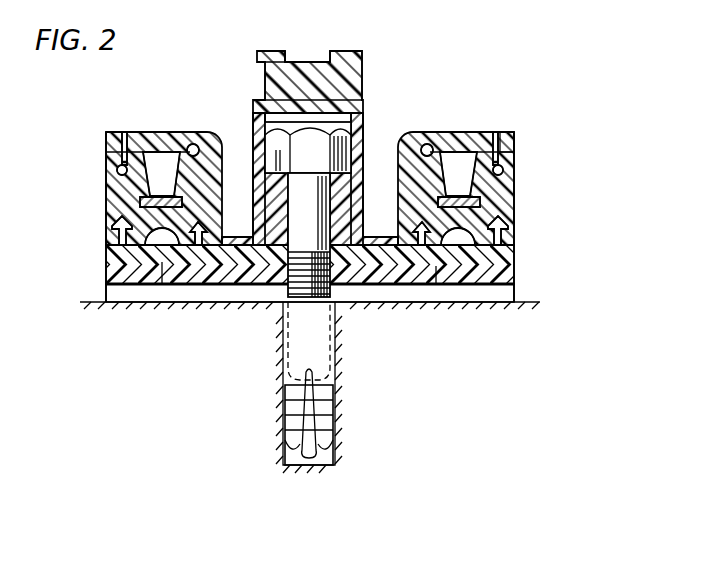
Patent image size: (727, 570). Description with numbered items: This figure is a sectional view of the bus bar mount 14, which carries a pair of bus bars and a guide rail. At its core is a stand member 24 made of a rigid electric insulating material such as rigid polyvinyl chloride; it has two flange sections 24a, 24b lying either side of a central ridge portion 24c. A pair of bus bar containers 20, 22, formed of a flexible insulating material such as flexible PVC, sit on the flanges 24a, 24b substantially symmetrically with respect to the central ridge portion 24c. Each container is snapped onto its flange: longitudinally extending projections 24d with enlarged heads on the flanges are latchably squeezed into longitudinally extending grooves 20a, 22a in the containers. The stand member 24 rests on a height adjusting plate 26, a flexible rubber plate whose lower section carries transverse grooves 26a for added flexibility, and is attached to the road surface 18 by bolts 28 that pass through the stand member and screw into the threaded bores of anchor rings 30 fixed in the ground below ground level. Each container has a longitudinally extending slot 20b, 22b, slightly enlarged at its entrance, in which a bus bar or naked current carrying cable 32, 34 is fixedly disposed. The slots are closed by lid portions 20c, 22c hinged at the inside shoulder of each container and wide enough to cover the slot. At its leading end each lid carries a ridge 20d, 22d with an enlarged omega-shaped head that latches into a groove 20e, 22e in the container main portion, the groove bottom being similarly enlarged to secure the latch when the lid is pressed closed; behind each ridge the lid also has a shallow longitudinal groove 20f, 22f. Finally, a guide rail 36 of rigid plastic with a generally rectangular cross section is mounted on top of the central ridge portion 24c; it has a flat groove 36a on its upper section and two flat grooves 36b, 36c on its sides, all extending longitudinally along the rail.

The bus bar mount 14 is at (468, 57).
The road surface 18 is at (85, 302).
The bus bar container 20 is at (508, 210).
The groove 20a is at (514, 240).
The slot 20b is at (456, 160).
The lid portion 20c is at (500, 152).
The ridge 20d is at (501, 147).
The groove 20e is at (504, 165).
The shallow groove 20f is at (499, 132).
The bus bar container 22 is at (110, 214).
The groove 22a is at (112, 238).
The slot 22b is at (148, 177).
The lid portion 22c is at (170, 132).
The ridge 22d is at (112, 165).
The groove 22e is at (125, 158).
The shallow groove 22f is at (135, 132).
The stand member 24 is at (370, 243).
The flange section 24a is at (436, 266).
The flange section 24b is at (162, 262).
The central ridge portion 24c is at (242, 150).
The projection 24d is at (506, 230).
The height adjusting plate 26 is at (516, 272).
The groove 26a is at (510, 292).
The bolt 28 is at (364, 120).
The anchor ring 30 is at (336, 356).
The bus bar 32 is at (482, 200).
The bus bar 34 is at (140, 203).
The guide rail 36 is at (338, 68).
The flat groove 36a is at (297, 62).
The flat groove 36b is at (356, 77).
The flat groove 36c is at (257, 76).